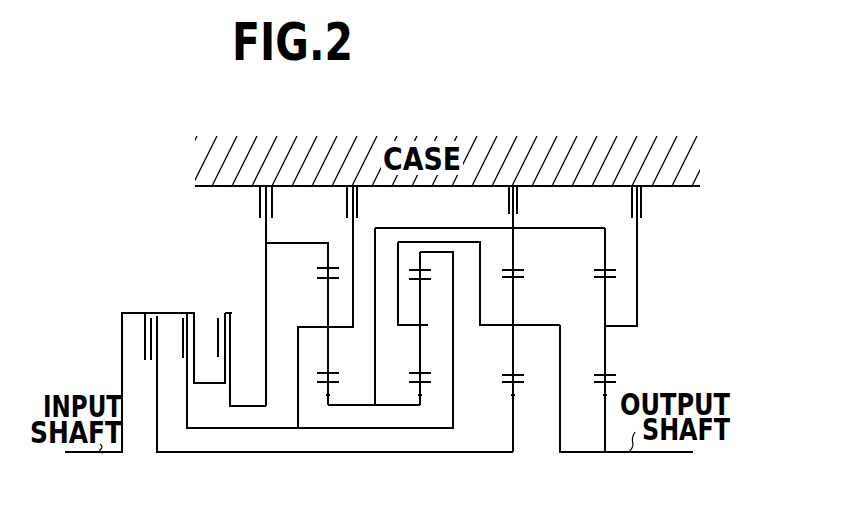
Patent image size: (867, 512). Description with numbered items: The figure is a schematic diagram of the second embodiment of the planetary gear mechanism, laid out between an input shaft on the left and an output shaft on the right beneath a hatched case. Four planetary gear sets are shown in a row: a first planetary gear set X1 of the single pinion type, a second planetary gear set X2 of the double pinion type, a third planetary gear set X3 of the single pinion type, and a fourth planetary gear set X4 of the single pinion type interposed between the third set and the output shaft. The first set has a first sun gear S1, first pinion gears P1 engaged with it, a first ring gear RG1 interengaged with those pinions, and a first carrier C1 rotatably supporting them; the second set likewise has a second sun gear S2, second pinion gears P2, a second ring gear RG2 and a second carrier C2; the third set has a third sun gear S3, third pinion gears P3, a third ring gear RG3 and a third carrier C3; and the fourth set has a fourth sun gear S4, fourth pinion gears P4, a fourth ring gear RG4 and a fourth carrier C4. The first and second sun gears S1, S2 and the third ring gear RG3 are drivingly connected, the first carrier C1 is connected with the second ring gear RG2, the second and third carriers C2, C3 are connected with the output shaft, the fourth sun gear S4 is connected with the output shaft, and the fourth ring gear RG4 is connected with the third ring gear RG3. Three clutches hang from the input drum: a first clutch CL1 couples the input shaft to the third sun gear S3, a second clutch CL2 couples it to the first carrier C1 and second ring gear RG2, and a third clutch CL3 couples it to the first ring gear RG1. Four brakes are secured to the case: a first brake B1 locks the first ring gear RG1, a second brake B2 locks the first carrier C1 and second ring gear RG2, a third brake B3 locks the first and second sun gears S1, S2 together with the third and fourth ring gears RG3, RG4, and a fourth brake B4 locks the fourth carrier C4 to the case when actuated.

The first clutch CL1 is at (150, 313).
The second clutch CL2 is at (185, 313).
The third clutch CL3 is at (228, 313).
The first brake B1 is at (248, 205).
The second brake B2 is at (368, 205).
The third brake B3 is at (530, 205).
The fourth brake B4 is at (653, 205).
The first ring gear RG1 is at (326, 258).
The second ring gear RG2 is at (423, 258).
The third ring gear RG3 is at (513, 256).
The fourth ring gear RG4 is at (608, 256).
The first carrier C1 is at (315, 327).
The second carrier C2 is at (416, 313).
The third carrier C3 is at (531, 325).
The fourth carrier C4 is at (618, 326).
The first pinion gears P1 is at (330, 357).
The second pinion gears P2 is at (420, 365).
The third pinion gears P3 is at (513, 358).
The fourth pinion gears P4 is at (607, 357).
The first planetary gear set X1 is at (322, 397).
The second planetary gear set X2 is at (414, 397).
The third planetary gear set X3 is at (507, 397).
The fourth planetary gear set X4 is at (598, 397).
The first sun gear S1 is at (334, 395).
The second sun gear S2 is at (427, 395).
The third sun gear S3 is at (518, 397).
The fourth sun gear S4 is at (610, 397).